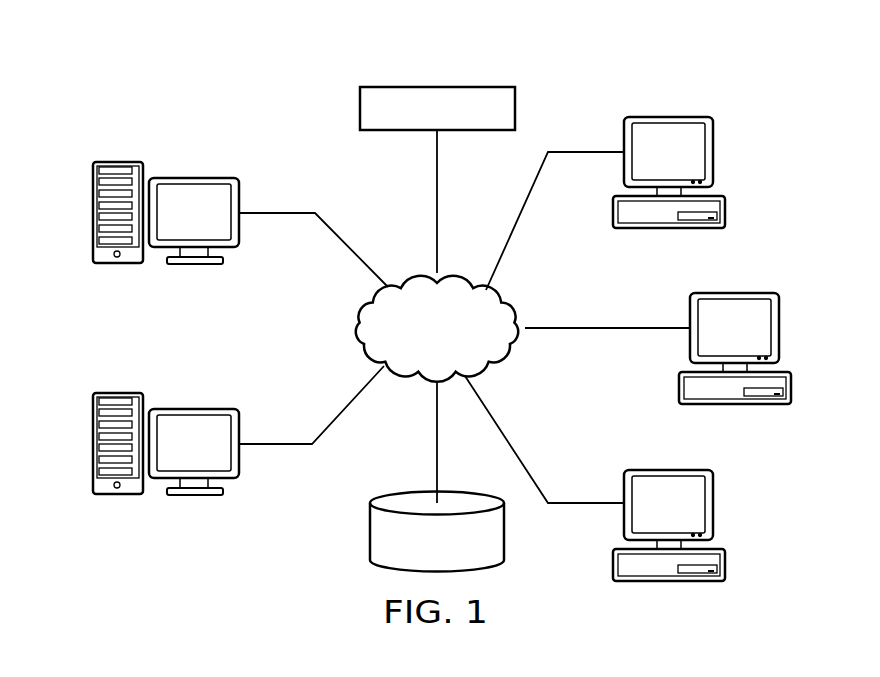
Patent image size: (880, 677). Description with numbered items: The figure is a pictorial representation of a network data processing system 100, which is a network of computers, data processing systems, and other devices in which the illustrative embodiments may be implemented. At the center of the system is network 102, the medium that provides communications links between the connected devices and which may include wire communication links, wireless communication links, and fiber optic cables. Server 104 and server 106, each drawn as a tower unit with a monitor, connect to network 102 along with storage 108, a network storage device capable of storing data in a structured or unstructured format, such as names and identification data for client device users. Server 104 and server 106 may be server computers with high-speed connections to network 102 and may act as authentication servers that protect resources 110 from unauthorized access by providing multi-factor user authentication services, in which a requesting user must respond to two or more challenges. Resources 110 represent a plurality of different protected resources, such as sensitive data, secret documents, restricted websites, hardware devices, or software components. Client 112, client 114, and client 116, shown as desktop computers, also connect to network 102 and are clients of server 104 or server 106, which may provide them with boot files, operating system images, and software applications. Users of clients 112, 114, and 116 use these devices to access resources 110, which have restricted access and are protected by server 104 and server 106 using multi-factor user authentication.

The network data processing system 100 is at (253, 64).
The network 102 is at (413, 278).
The server 104 is at (93, 212).
The server 106 is at (93, 443).
The storage 108 is at (370, 530).
The resources 110 is at (425, 86).
The client 112 is at (726, 212).
The client 114 is at (792, 389).
The client 116 is at (727, 565).